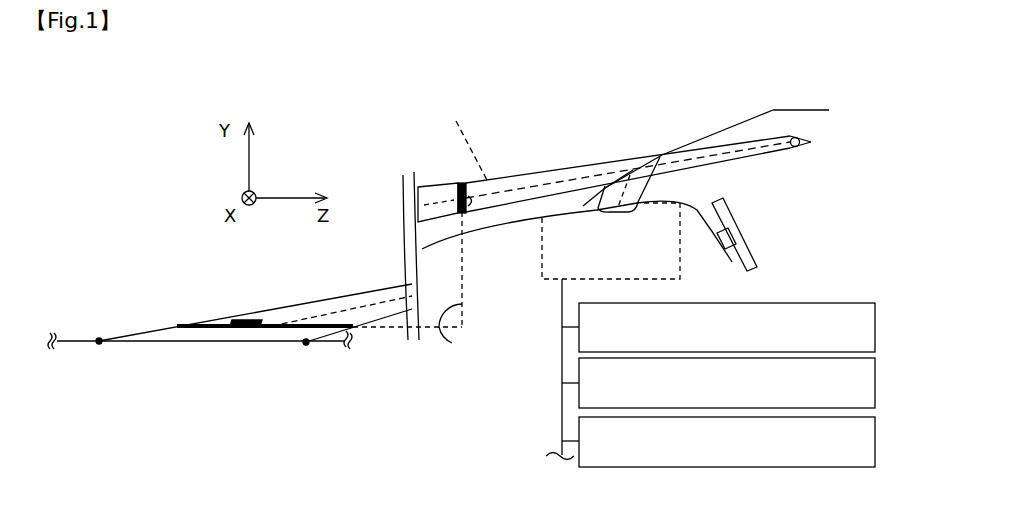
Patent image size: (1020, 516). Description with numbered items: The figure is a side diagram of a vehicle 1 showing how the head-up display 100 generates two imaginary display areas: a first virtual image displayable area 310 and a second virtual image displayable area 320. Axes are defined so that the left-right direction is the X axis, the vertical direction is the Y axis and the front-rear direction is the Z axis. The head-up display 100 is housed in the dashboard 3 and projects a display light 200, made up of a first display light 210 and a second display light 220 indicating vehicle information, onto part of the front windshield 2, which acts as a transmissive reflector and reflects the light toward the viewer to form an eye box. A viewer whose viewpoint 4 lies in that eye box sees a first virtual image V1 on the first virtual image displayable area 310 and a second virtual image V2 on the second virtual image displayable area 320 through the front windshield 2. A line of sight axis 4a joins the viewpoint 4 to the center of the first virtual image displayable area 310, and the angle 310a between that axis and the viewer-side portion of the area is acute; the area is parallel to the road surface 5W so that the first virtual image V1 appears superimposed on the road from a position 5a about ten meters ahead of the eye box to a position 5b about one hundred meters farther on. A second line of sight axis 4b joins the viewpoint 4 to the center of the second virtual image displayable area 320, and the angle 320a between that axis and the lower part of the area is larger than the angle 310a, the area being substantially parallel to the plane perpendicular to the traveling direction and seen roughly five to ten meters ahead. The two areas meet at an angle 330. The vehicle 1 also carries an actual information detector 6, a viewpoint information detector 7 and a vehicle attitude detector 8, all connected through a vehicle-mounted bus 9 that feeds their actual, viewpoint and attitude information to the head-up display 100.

The vehicle 1 is at (794, 105).
The front windshield 2 is at (718, 130).
The dashboard 3 is at (680, 200).
The viewpoint 4 is at (797, 150).
The line of sight axis 4a is at (360, 296).
The line of sight axis 4b is at (464, 140).
The road surface 5W is at (66, 336).
The position 5a is at (308, 345).
The position 5b is at (101, 344).
The actual information detector 6 is at (876, 338).
The viewpoint information detector 7 is at (876, 392).
The vehicle attitude detector 8 is at (876, 452).
The bus 9 is at (560, 386).
The head-up display 100 is at (536, 283).
The display light 200 is at (360, 313).
The first display light 210 is at (550, 164).
The second display light 220 is at (628, 170).
The first virtual image displayable area 310 is at (175, 326).
The angle 310a is at (314, 318).
The second virtual image displayable area 320 is at (456, 186).
The angle 320a is at (472, 210).
The angle 330 is at (466, 287).
The first virtual image V1 is at (245, 320).
The second virtual image V2 is at (460, 186).